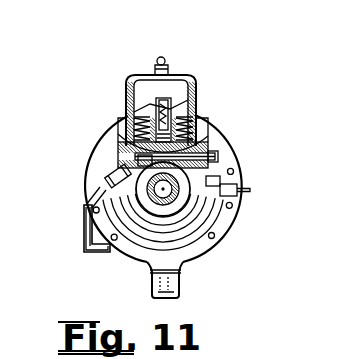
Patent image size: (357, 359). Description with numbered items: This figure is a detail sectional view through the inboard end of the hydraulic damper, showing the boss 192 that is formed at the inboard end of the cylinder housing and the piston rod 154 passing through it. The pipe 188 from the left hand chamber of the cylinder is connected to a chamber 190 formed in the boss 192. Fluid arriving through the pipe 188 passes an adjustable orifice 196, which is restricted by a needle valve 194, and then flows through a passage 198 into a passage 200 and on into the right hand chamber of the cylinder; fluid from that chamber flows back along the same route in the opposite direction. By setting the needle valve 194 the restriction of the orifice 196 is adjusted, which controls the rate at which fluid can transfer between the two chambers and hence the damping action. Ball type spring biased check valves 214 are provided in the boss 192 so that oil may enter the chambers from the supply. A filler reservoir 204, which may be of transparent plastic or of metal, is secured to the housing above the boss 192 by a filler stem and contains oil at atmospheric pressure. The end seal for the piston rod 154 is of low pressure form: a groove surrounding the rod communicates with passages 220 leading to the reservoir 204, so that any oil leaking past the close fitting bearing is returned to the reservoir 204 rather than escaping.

The piston rod 154 is at (172, 200).
The pipe 188 is at (83, 242).
The chamber 190 is at (160, 155).
The boss 192 is at (125, 142).
The needle valve 194 is at (218, 181).
The adjustable orifice 196 is at (90, 200).
The passage 198 is at (150, 160).
The passage 200 is at (158, 142).
The filler reservoir 204 is at (207, 118).
The ball type spring biased check valves 214 is at (136, 122).
The passages 220 is at (248, 191).